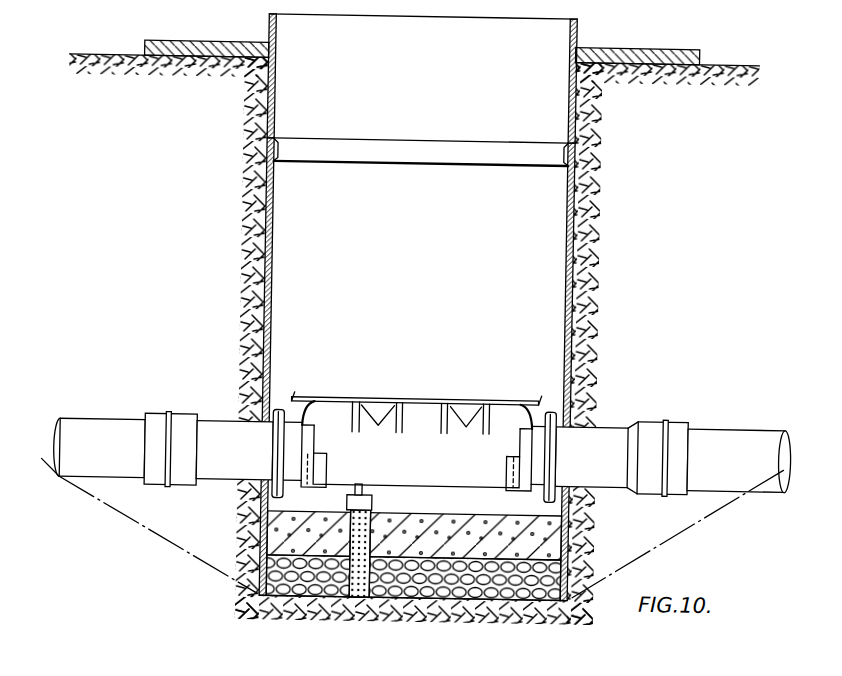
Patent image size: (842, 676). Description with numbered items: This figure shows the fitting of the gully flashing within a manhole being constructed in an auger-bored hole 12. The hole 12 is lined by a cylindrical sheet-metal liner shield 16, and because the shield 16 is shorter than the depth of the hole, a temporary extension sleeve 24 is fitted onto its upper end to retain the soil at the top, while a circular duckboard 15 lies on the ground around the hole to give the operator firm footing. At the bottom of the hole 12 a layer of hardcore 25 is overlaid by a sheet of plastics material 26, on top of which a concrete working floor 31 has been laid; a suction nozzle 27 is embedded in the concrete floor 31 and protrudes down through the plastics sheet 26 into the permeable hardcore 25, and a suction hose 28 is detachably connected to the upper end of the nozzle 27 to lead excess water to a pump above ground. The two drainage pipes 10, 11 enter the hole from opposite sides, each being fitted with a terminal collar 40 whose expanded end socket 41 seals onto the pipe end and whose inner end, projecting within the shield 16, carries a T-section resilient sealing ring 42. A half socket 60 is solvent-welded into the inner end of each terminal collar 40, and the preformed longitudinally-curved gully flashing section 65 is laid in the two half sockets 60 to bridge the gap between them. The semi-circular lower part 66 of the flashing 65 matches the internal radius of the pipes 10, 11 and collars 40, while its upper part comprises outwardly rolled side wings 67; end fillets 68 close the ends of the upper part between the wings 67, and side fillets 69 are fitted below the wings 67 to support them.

The drainage pipe 10 is at (112, 430).
The drainage pipe 11 is at (726, 430).
The hole 12 is at (392, 307).
The circular duckboard 15 is at (645, 46).
The cylindrical liner shield 16 is at (566, 225).
The temporary extension sleeve 24 is at (566, 116).
The layer of hardcore 25 is at (313, 609).
The sheet of plastics material 26 is at (282, 551).
The suction nozzle 27 is at (377, 538).
The suction hose 28 is at (375, 504).
The concrete working floor 31 is at (556, 543).
The terminal collar 40 is at (227, 424).
The expanded end socket 41 is at (177, 422).
The T-section resilient sealing ring 42 is at (278, 458).
The half socket 60 is at (329, 462).
The gully flashing section 65 is at (419, 438).
The lower part of gully flashing 66 is at (467, 486).
The side wings 67 is at (379, 402).
The end fillets 68 is at (304, 402).
The side fillets 69 is at (421, 427).